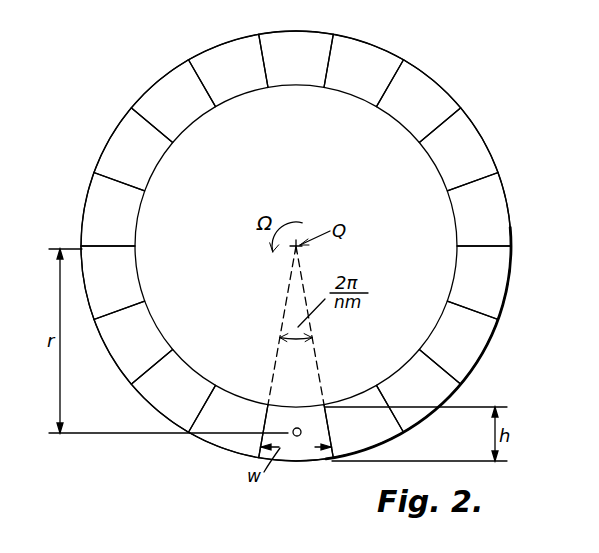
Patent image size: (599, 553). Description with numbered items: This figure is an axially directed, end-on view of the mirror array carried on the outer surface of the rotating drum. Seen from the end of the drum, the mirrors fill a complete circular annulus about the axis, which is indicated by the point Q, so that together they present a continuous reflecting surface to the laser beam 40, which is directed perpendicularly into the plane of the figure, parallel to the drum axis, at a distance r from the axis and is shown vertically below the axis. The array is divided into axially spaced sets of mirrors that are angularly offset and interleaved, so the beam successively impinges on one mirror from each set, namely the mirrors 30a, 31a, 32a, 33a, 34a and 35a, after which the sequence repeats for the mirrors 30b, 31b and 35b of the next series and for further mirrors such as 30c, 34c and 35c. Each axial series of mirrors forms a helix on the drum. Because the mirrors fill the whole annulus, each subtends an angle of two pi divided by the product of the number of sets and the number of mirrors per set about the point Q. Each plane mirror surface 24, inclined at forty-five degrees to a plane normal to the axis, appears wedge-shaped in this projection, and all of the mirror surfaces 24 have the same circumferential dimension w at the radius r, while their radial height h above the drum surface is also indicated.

The mirror 30a is at (285, 407).
The mirror 31a is at (230, 393).
The mirror 32a is at (190, 370).
The mirror 33a is at (155, 325).
The mirror 34a is at (137, 268).
The mirror 35a is at (137, 222).
The mirror 30b is at (155, 163).
The mirror 31b is at (196, 118).
The mirror 35b is at (388, 118).
The mirror 30c is at (435, 157).
The mirror 34c is at (402, 365).
The mirror 35c is at (348, 400).
The plane mirror surface 24 is at (205, 435).
The laser beam 40 is at (297, 434).